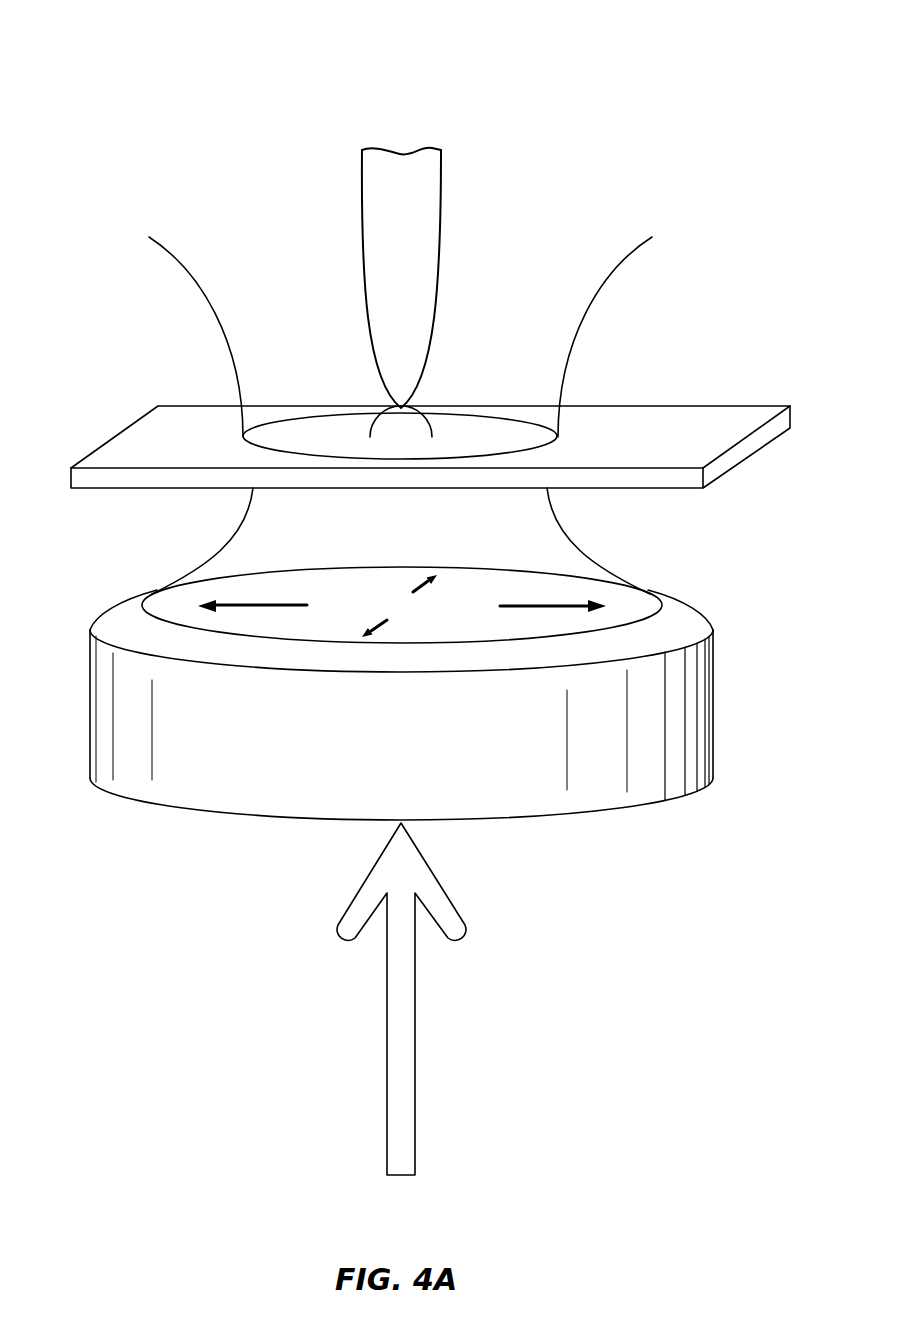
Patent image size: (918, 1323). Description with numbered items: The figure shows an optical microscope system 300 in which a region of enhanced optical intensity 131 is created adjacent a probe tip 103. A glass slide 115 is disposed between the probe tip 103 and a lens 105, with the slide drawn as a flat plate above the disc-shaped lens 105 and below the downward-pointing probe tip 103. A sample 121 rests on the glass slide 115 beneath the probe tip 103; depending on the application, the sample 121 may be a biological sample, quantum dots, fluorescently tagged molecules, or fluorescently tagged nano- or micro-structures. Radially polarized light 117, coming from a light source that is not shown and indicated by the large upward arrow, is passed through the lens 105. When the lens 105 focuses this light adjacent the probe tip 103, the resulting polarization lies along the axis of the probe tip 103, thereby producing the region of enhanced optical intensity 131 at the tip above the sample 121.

The optical microscope system 300 is at (128, 117).
The probe tip 103 is at (433, 227).
The lens 105 is at (720, 682).
The glass slide 115 is at (683, 413).
The radially polarized light 117 is at (416, 1032).
The sample 121 is at (465, 423).
The region of enhanced optical intensity 131 is at (440, 415).